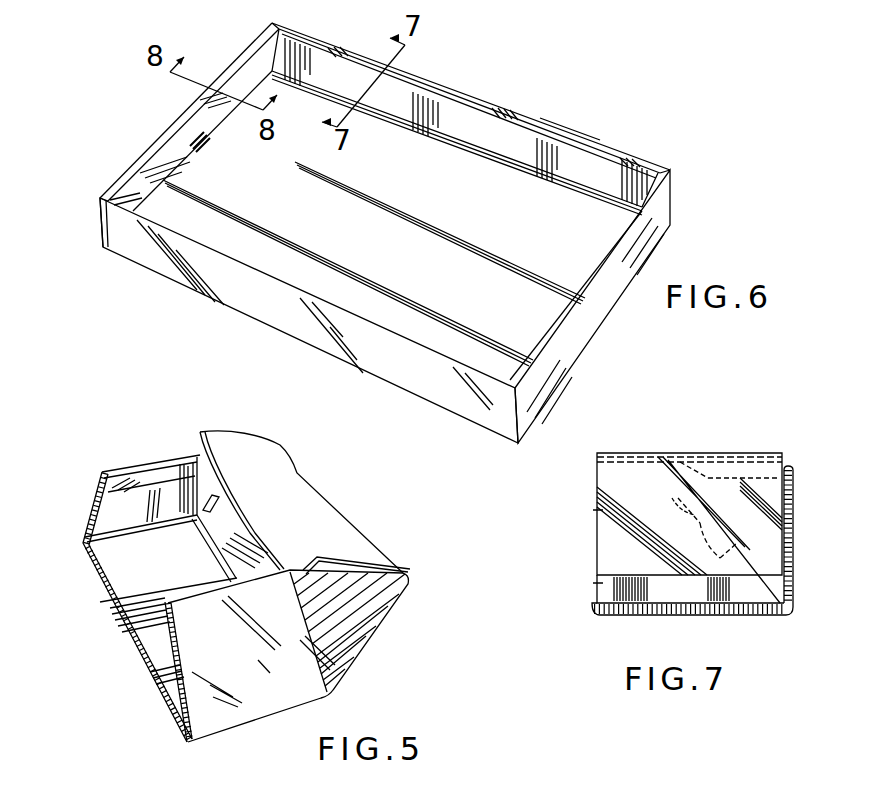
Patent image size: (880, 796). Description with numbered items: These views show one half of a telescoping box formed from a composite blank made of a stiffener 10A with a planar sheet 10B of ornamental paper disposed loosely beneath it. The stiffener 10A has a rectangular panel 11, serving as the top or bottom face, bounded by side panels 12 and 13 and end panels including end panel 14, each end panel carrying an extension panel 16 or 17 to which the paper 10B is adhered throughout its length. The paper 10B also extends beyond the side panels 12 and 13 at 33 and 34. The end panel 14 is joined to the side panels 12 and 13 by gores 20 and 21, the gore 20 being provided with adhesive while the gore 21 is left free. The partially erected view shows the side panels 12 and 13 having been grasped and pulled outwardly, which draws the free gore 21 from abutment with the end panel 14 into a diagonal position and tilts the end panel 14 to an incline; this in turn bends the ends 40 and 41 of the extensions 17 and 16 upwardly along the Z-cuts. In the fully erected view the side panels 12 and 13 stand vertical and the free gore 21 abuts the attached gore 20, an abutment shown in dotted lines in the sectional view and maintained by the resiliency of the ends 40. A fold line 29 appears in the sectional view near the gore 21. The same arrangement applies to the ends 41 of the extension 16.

In FIG. 6, the stiffener 10A is at (320, 231).
In FIG. 5, the stiffener 10A is at (145, 599).
In FIG. 7, the stiffener 10A is at (755, 540).
In FIG. 6, the planar sheet 10B is at (174, 256).
In FIG. 5, the planar sheet 10B is at (128, 641).
In FIG. 7, the planar sheet 10B is at (622, 611).
In FIG. 6, the rectangular panel 11 is at (406, 261).
In FIG. 5, the rectangular panel 11 is at (146, 583).
In FIG. 7, the rectangular panel 11 is at (607, 604).
In FIG. 6, the side panel 12 is at (502, 140).
In FIG. 5, the side panel 12 is at (226, 666).
In FIG. 7, the side panel 12 is at (778, 546).
In FIG. 6, the side panel 13 is at (282, 313).
In FIG. 5, the side panel 13 is at (125, 508).
In FIG. 6, the end panel 14 is at (200, 143).
In FIG. 5, the end panel 14 is at (233, 547).
In FIG. 7, the end panel 14 is at (688, 592).
In FIG. 6, the extension panel 16 is at (184, 153).
In FIG. 5, the extension panel 16 is at (283, 530).
In FIG. 7, the extension panel 16 is at (613, 552).
In FIG. 6, the extension panel 17 is at (587, 334).
In FIG. 5, the gore 20 is at (375, 612).
In FIG. 7, the gore 20 is at (676, 456).
In FIG. 5, the gore 21 is at (192, 487).
In FIG. 7, the gore 21 is at (706, 460).
In FIG. 7, the fold line 29 is at (680, 518).
In FIG. 6, the paper extension 33 is at (576, 141).
In FIG. 5, the paper extension 33 is at (150, 622).
In FIG. 7, the paper extension 33 is at (782, 476).
In FIG. 5, the paper extension 34 is at (95, 503).
In FIG. 5, the end of panel extension 40 is at (222, 430).
In FIG. 5, the end of panel extension 41 is at (355, 562).